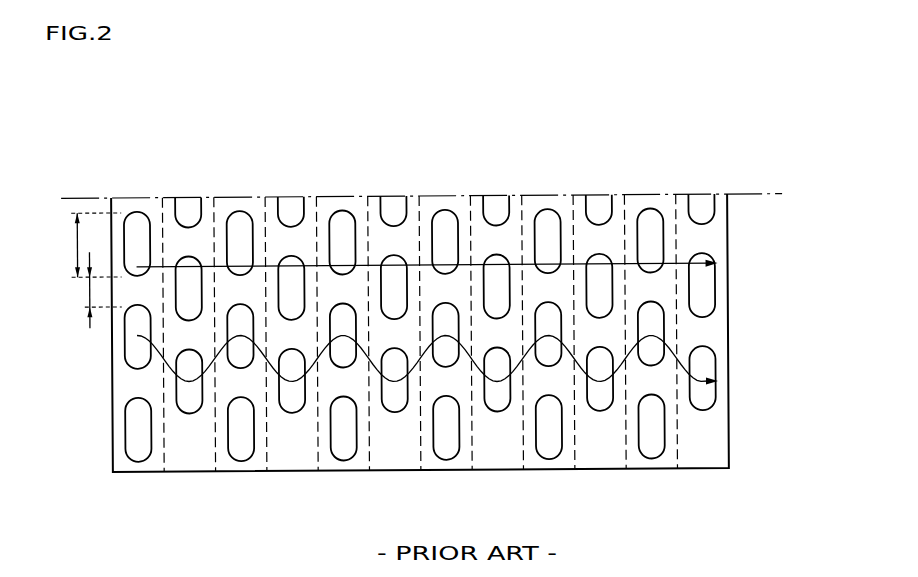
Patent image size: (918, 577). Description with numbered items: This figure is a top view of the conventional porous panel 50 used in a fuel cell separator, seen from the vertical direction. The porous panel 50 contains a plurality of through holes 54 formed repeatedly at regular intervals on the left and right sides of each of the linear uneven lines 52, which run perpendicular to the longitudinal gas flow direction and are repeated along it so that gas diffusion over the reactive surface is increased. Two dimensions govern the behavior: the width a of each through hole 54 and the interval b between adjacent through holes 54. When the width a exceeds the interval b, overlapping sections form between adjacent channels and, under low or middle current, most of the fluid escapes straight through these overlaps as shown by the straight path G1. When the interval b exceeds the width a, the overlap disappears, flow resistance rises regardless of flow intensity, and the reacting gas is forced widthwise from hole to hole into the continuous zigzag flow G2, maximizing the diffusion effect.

The porous panel 50 is at (133, 155).
The linear uneven lines 52 is at (163, 452).
The through holes 54 is at (665, 433).
The straight flow path G1 is at (680, 265).
The zigzag flow path G2 is at (668, 340).
The width of through hole a is at (91, 245).
The interval between through holes b is at (97, 290).